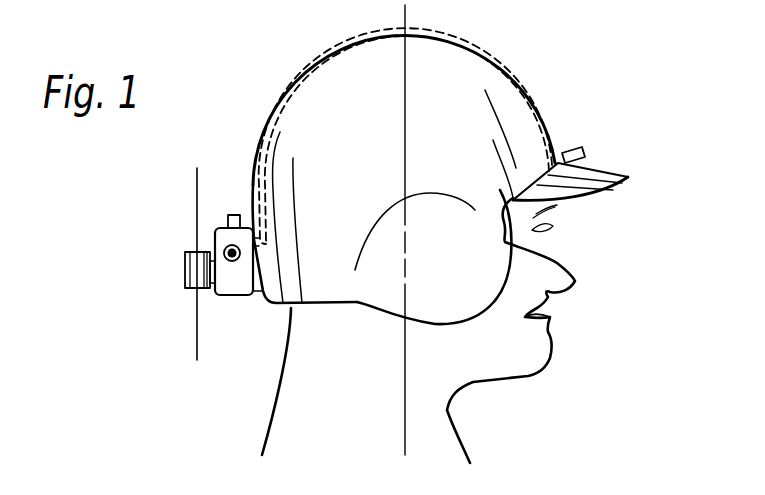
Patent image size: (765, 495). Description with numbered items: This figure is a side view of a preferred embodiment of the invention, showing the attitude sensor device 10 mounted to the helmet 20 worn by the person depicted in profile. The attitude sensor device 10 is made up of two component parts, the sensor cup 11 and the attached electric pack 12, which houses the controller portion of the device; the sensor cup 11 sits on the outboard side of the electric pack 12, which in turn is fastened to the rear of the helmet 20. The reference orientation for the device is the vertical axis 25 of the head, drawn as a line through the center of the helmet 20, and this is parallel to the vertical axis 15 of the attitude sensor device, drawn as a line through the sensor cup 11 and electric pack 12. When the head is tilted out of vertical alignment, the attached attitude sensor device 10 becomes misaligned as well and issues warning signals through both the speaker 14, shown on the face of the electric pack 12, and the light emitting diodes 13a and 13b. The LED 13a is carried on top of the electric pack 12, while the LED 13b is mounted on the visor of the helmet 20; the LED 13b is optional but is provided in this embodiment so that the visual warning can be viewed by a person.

The attitude sensor device 10 is at (216, 308).
The sensor cup 11 is at (185, 276).
The electric pack 12 is at (230, 296).
The light emitting diode 13a is at (234, 214).
The light emitting diode 13b is at (587, 151).
The speaker 14 is at (234, 258).
The vertical axis of the attitude sensor device 15 is at (197, 207).
The helmet 20 is at (369, 131).
The vertical axis of the head 25 is at (407, 25).